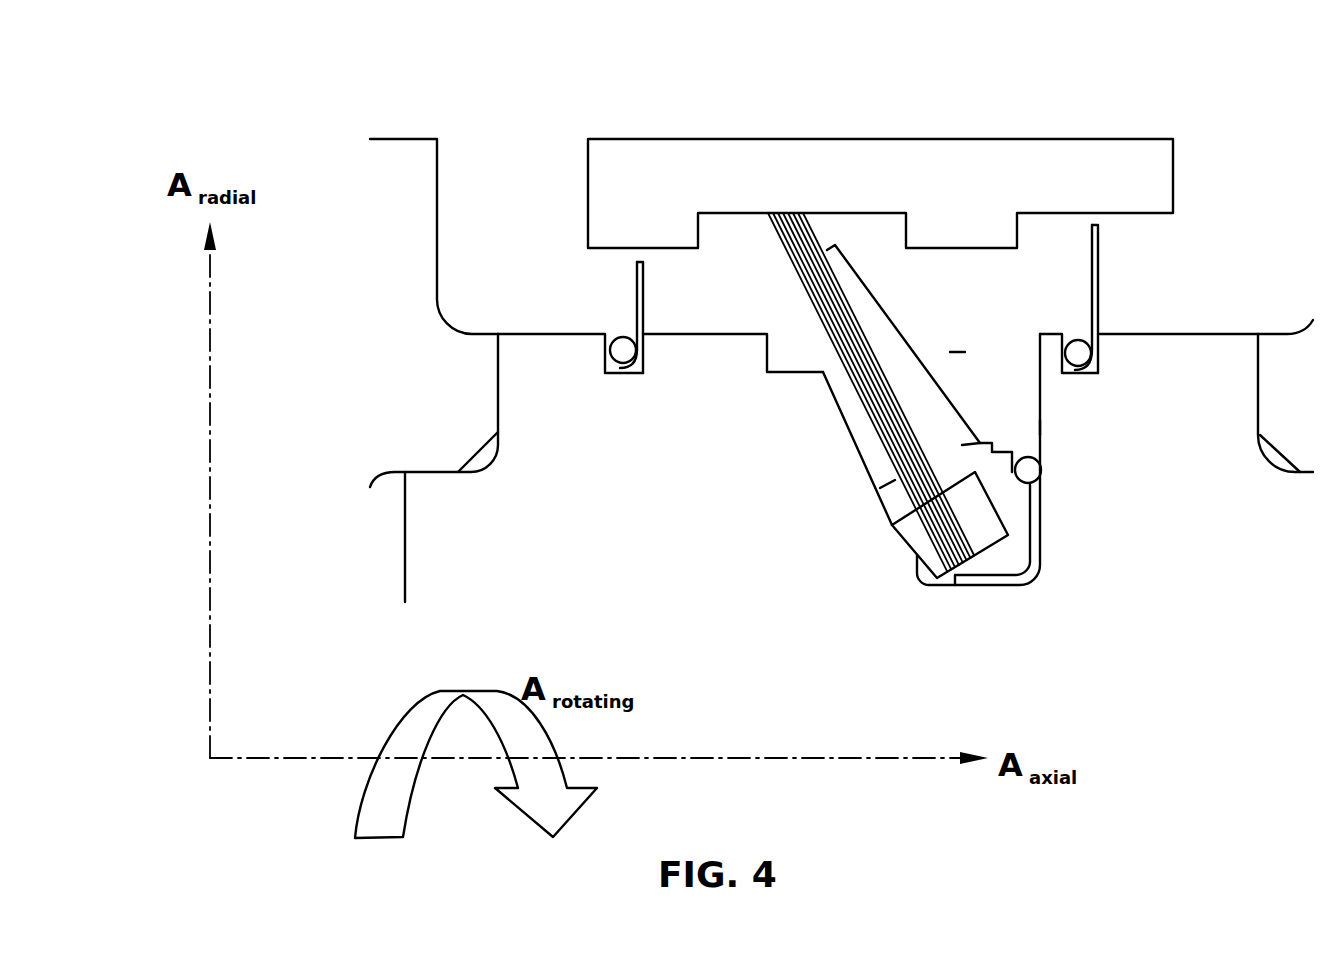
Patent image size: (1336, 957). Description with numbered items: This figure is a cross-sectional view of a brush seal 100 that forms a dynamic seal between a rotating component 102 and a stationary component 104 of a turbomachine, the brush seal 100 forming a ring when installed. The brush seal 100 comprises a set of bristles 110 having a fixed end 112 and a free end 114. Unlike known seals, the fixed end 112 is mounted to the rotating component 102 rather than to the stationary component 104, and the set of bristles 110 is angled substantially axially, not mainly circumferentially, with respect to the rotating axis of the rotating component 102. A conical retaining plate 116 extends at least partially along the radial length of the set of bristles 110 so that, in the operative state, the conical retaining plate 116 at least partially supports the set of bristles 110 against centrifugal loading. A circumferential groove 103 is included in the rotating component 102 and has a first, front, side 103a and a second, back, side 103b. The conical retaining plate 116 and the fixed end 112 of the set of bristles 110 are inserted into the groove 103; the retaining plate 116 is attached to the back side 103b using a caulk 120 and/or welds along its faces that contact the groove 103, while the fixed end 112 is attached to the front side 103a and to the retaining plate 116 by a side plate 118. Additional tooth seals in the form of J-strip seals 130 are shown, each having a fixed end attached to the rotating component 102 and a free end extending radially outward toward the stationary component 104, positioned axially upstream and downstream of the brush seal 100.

The brush seal 100 is at (489, 107).
The rotating component 102 is at (548, 440).
The circumferential groove 103 is at (965, 349).
The first, front, side 103a is at (889, 482).
The second, back, side 103b is at (1032, 421).
The stationary component 104 is at (1043, 174).
The set of bristles 110 is at (849, 391).
The fixed end 112 is at (939, 542).
The free end 114 is at (777, 238).
The conical retaining plate 116 is at (962, 445).
The side plate 118 is at (992, 527).
The caulk 120 is at (1031, 483).
The J-strip seals 130 is at (629, 316).